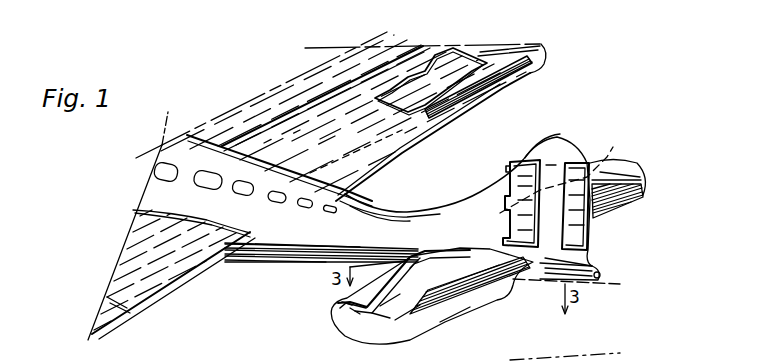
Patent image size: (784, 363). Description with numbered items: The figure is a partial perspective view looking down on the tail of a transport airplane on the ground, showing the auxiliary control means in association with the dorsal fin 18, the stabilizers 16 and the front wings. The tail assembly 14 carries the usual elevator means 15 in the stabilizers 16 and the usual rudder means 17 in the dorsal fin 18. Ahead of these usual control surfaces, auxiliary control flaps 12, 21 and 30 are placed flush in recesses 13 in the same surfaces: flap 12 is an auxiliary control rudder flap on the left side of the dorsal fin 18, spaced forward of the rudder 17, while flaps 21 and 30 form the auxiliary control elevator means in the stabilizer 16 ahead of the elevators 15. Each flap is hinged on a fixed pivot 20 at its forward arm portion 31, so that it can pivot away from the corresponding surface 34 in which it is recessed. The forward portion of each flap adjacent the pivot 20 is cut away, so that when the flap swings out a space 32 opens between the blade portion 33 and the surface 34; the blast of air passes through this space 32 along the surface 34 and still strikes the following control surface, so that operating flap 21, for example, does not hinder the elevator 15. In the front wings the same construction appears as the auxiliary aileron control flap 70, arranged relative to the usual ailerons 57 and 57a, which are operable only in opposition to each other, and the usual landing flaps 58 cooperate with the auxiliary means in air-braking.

The auxiliary control flap 12 is at (540, 164).
The recess 13 is at (357, 314).
The tail assembly 14 is at (408, 215).
The elevator means 15 is at (462, 302).
The stabilizer 16 is at (405, 325).
The rudder means 17 is at (587, 221).
The dorsal fin 18 is at (555, 136).
The pivot 20 is at (346, 304).
The auxiliary control flap 21 is at (353, 309).
The auxiliary control flap 30 is at (565, 170).
The forward arm portion 31 is at (343, 301).
The space 32 is at (412, 251).
The blade portion 33 is at (386, 314).
The corresponding surface 34 is at (453, 277).
The aileron 57 is at (495, 82).
The aileron 57a is at (114, 313).
The landing flap 58 is at (360, 163).
The auxiliary aileron control flap 70 is at (468, 61).